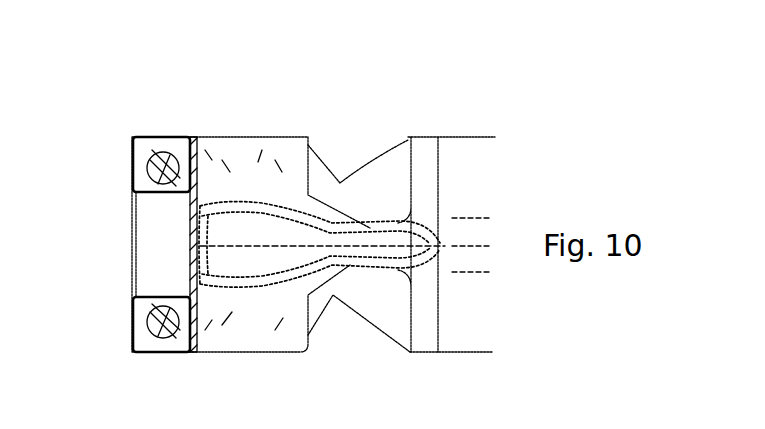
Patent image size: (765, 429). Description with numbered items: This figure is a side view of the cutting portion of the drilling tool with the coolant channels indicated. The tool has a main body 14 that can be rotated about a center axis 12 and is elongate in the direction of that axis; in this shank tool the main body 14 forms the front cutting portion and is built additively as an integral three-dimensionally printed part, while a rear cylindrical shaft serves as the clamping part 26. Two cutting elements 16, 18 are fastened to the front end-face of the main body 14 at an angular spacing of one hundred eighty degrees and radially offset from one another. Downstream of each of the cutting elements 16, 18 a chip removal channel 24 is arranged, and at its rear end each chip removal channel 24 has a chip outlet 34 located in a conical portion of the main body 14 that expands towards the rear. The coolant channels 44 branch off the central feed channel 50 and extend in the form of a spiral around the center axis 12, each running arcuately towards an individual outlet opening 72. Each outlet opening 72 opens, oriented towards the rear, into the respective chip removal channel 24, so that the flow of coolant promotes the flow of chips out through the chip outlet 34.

The center axis 12 is at (468, 243).
The main body 14 is at (217, 142).
The cutting element 16 is at (137, 305).
The cutting element 18 is at (133, 173).
The chip removal channel 24 is at (251, 146).
The clamping part 26 is at (488, 353).
The chip outlet 34 is at (330, 185).
The coolant channel 44 is at (270, 207).
The central feed channel 50 is at (470, 268).
The outlet opening 72 is at (193, 142).